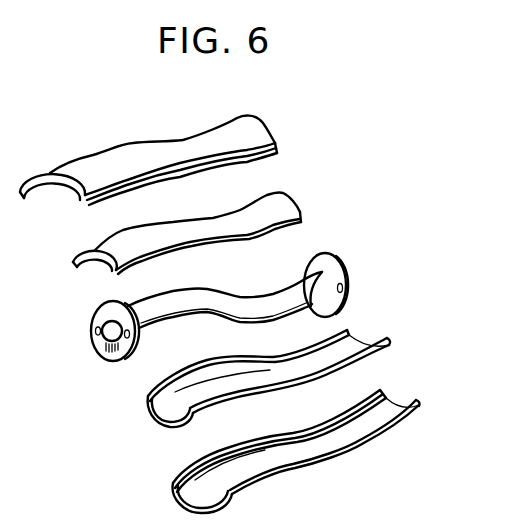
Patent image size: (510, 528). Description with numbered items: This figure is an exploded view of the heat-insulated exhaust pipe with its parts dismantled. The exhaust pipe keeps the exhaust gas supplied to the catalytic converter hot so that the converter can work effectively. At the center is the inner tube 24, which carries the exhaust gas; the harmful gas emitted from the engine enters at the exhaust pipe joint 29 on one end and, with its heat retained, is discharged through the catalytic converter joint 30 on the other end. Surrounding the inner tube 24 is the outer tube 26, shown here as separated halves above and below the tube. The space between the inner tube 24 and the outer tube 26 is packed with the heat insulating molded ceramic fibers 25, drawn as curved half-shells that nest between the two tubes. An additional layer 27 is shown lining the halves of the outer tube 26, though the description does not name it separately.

The inner tube 24 is at (247, 308).
The heat insulating molded ceramic fibers 25 is at (288, 207).
The outer tube 26 is at (251, 133).
The lining layer 27 is at (278, 145).
The exhaust pipe joint 29 is at (100, 306).
The catalytic converter joint 30 is at (349, 274).